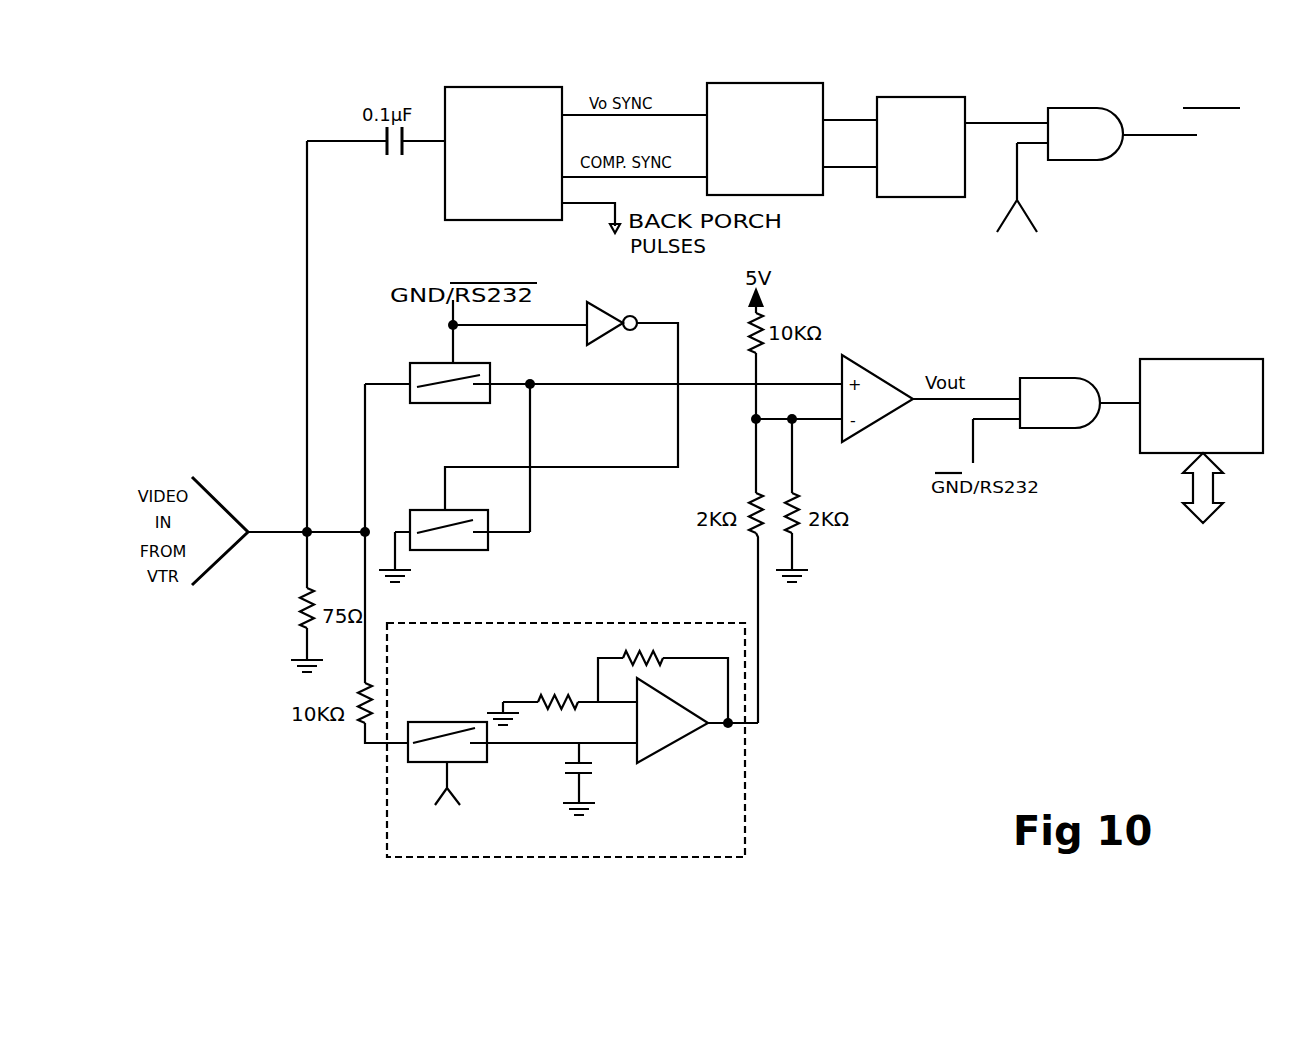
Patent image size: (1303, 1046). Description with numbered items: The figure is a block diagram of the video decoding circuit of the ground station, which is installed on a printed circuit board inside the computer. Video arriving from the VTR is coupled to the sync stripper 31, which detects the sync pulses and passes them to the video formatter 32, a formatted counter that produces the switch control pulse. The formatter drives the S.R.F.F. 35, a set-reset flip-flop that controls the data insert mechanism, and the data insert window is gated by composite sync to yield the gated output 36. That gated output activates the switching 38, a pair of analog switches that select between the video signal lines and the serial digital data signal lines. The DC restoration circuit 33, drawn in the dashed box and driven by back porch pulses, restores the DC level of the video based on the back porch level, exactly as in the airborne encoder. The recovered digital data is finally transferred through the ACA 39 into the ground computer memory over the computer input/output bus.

The sync stripper 31 is at (507, 87).
The video formatter 32 is at (760, 83).
The S.R.F.F. 35 is at (927, 97).
The gated output GND/RS232 36 is at (1174, 106).
The switching 38 is at (410, 364).
The ACA 39 is at (1195, 359).
The DC restoration circuit 33 is at (620, 857).